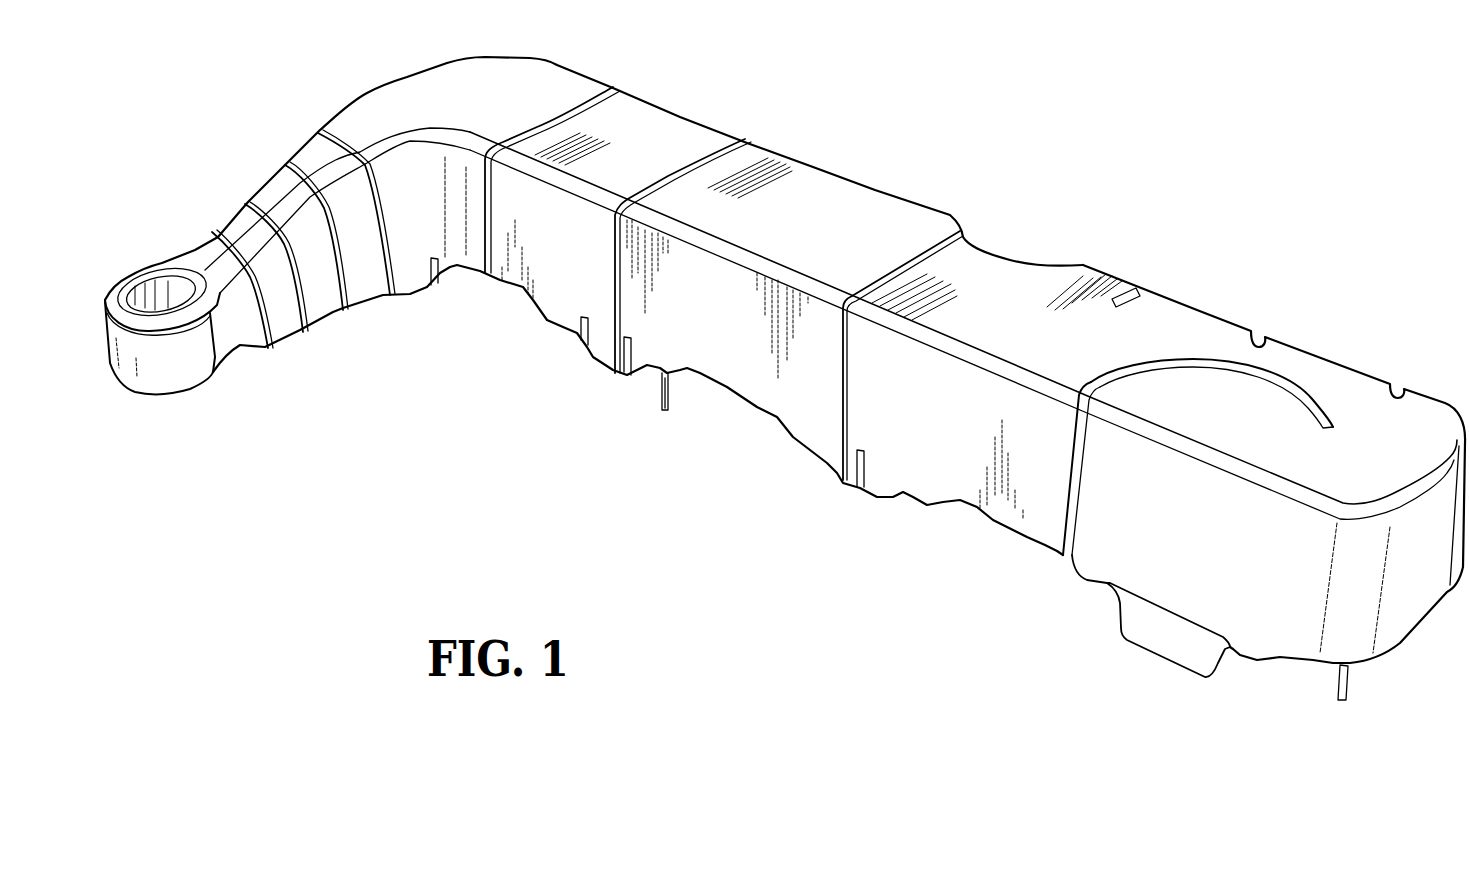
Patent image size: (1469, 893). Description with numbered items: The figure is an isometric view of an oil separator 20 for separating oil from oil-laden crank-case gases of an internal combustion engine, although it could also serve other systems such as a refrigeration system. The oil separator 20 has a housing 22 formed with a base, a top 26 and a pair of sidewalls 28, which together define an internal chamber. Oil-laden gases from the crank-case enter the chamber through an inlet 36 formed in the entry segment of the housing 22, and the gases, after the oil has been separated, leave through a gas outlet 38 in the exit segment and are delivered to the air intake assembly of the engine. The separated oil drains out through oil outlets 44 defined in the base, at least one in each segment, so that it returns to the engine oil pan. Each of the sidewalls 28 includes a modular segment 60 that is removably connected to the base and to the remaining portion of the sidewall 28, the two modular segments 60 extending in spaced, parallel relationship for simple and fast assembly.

The oil separator 20 is at (1070, 166).
The housing 22 is at (1170, 292).
The top 26 is at (1207, 330).
The sidewalls 28 is at (930, 450).
The inlet 36 is at (1162, 643).
The gas outlet 38 is at (215, 377).
The oil outlet 44 is at (660, 402).
The modular segment 60 is at (782, 398).